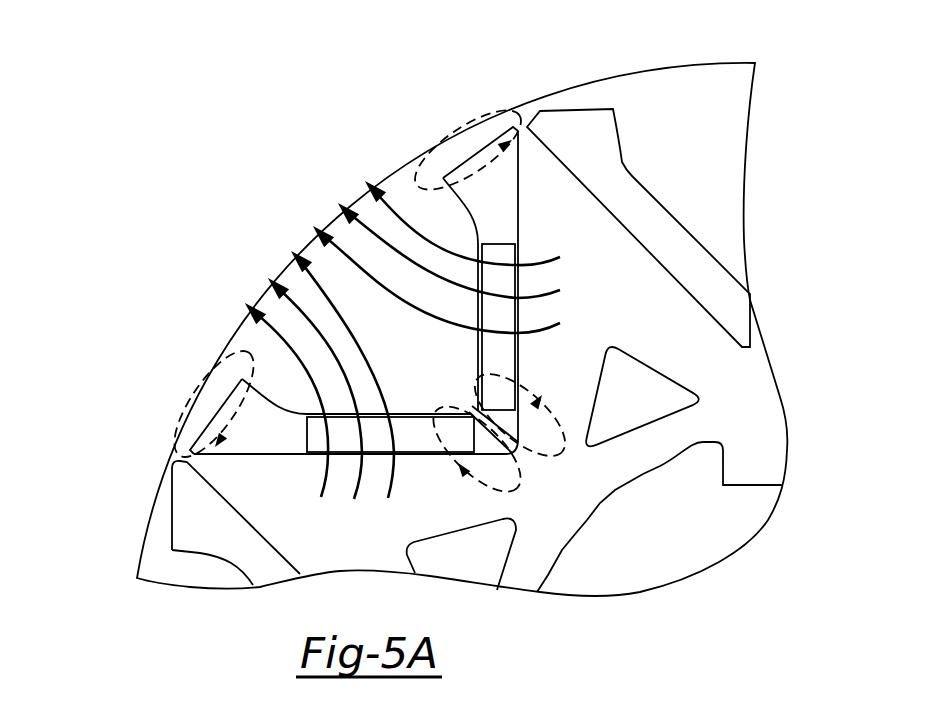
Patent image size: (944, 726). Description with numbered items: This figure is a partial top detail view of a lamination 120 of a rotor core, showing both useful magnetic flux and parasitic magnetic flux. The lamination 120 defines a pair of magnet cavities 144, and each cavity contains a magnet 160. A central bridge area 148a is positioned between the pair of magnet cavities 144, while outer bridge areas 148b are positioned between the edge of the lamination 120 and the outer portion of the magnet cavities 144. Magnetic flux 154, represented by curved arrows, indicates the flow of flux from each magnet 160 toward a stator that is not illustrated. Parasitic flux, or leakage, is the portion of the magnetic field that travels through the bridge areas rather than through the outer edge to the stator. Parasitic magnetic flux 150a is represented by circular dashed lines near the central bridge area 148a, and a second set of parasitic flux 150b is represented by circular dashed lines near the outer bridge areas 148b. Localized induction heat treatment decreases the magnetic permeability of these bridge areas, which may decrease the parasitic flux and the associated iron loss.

The lamination 120 is at (228, 330).
The magnet cavities 144 is at (503, 223).
The central bridge area 148a is at (470, 404).
The outer bridge areas 148b is at (447, 150).
The parasitic magnetic flux 150a is at (552, 394).
The second set of parasitic flux 150b is at (499, 108).
The magnetic flux 154 is at (360, 163).
The magnet 160 is at (507, 318).